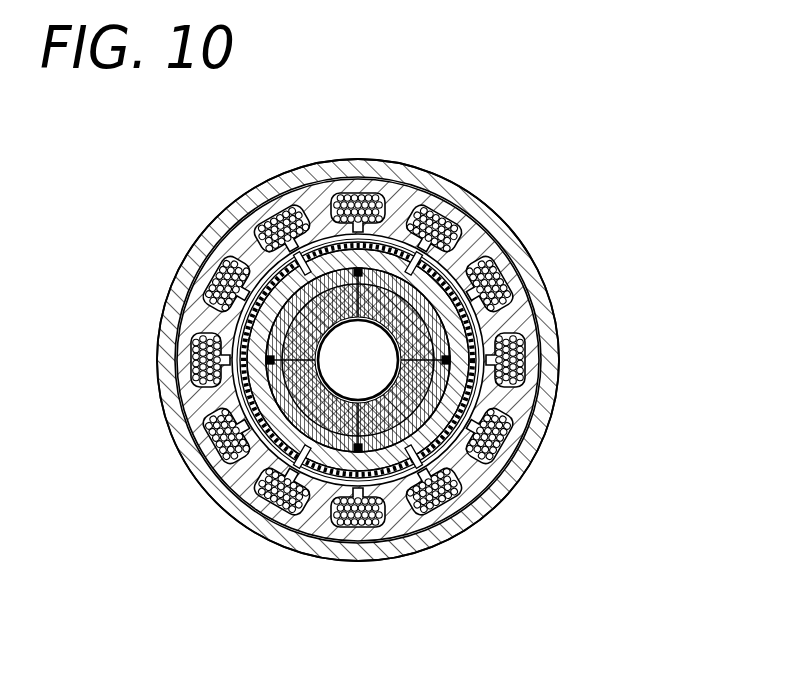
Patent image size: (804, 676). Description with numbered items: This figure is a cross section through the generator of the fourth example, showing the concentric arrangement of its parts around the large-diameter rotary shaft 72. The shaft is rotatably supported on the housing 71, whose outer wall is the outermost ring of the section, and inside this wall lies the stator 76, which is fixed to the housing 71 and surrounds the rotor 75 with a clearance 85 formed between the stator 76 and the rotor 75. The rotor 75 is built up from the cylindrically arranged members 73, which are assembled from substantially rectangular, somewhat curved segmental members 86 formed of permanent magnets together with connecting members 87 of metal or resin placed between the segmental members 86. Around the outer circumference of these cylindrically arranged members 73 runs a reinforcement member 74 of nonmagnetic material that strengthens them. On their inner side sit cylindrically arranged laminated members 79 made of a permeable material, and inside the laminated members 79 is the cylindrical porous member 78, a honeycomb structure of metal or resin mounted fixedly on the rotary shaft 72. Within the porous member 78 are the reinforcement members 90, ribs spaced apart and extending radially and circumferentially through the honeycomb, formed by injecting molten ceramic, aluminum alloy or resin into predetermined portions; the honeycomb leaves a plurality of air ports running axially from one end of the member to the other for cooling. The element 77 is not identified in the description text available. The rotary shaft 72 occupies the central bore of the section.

The housing 71 is at (549, 290).
The rotary shaft 72 is at (371, 371).
The cylindrically arranged members 73 is at (256, 344).
The reinforcement member 74 is at (252, 336).
The rotor 75 is at (266, 280).
The stator 76 is at (475, 243).
The housing cylindrical wall 77 is at (527, 250).
The cylindrical porous member 78 is at (272, 280).
The cylindrically arranged laminated members 79 is at (333, 268).
The clearance 85 is at (390, 248).
The segmental members 86 is at (238, 393).
The connecting members 87 is at (512, 402).
The reinforcement members 90 is at (315, 577).